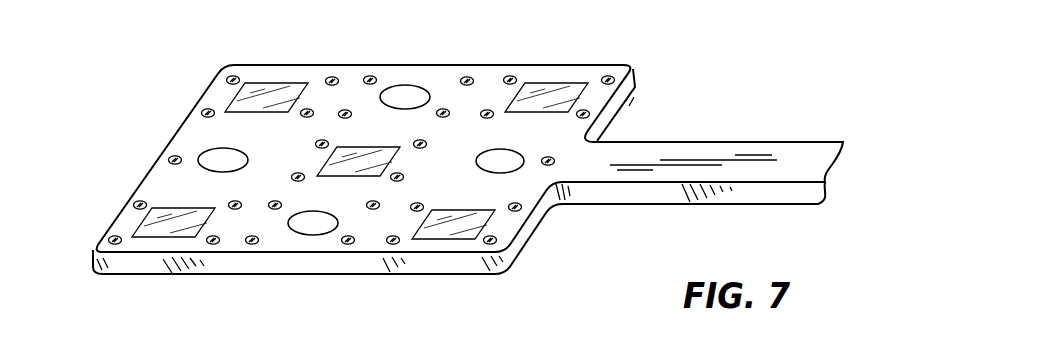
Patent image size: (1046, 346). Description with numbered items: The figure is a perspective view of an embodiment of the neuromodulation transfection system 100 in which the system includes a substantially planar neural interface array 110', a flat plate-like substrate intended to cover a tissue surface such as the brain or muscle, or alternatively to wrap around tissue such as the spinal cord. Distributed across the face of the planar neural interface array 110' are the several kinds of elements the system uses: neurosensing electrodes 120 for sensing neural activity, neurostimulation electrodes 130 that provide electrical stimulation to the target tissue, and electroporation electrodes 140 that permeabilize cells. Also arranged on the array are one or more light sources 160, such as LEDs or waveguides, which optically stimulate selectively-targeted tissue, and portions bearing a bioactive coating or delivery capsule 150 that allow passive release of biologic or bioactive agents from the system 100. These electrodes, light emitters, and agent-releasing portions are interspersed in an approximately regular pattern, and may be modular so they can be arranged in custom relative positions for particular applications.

The neuromodulation transfection system 100 is at (133, 146).
The planar neural interface array 110' is at (468, 169).
The neurosensing electrode 120 is at (510, 78).
The neurostimulation electrode 130 is at (608, 74).
The electroporation electrode 140 is at (268, 204).
The delivery capsule 150 is at (413, 88).
The light source 160 is at (262, 90).